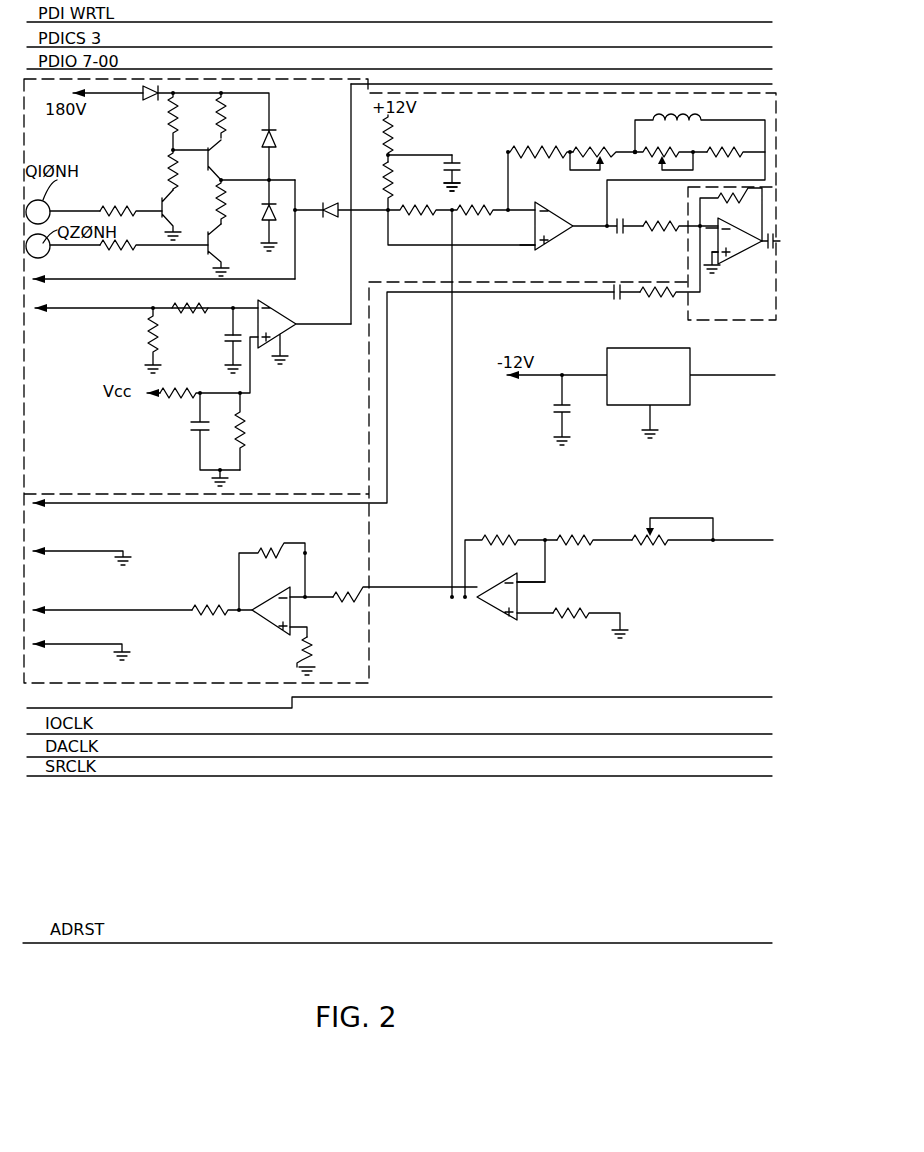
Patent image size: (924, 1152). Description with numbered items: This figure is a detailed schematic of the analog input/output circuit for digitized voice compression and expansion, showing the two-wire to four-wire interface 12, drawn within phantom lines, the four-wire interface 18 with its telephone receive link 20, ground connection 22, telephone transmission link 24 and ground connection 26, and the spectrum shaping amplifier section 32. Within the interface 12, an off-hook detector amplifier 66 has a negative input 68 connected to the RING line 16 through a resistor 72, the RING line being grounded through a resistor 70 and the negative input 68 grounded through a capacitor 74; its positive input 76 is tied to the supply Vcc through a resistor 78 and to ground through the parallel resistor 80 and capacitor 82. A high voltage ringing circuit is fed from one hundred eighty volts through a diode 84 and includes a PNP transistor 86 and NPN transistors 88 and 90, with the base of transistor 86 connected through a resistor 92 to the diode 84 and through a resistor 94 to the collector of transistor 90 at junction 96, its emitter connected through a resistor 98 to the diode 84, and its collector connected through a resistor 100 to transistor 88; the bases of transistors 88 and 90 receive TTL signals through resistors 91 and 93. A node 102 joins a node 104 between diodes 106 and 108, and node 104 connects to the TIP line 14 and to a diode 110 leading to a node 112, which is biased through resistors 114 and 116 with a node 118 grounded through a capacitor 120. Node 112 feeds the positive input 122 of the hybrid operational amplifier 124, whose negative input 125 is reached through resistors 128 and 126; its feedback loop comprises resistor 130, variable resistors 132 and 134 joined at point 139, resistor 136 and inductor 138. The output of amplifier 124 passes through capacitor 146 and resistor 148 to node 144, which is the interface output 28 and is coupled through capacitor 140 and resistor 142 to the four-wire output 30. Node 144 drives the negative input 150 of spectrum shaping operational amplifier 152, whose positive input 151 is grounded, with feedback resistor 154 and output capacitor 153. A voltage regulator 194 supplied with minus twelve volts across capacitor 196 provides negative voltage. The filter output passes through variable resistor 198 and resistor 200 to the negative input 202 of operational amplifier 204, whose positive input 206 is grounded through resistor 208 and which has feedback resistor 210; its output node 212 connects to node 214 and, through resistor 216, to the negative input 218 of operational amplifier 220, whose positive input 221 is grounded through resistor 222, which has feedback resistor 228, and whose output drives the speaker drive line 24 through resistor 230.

The two-wire to four-wire interface 12 is at (244, 76).
The two-wire telephone transmission line (TIP line) 14 is at (132, 288).
The two-wire telephone transmission line (RING line) 16 is at (87, 312).
The four-wire interface 18 is at (263, 684).
The telephone receive link 20 is at (101, 506).
The ground connection 22 is at (88, 555).
The telephone transmission link 24 is at (123, 613).
The ground connection 26 is at (93, 648).
The output of two-wire-to-four-wire interface 28 is at (718, 224).
The output of four-wire interface 30 is at (388, 465).
The spectrum shaping amplifier 32 is at (721, 321).
The off-hook detector amplifier 66 is at (295, 315).
The negative input 68 is at (257, 303).
The 47 ohm resistor 70 is at (162, 342).
The 160 Kohm resistor 72 is at (190, 300).
The 1 microfarad capacitor 74 is at (228, 346).
The positive input 76 is at (255, 343).
The 10 Kohm resistor 78 is at (180, 397).
The 1.6 Kohm resistor 80 is at (243, 430).
The 0.01 microfarad capacitor 82 is at (197, 432).
The diode 84 is at (150, 101).
The PNP transistor 86 is at (207, 156).
The NPN transistor 88 is at (199, 249).
The NPN transistor 90 is at (162, 203).
The 82 Kohm resistor 91 is at (117, 195).
The 4.7 Kohm resistor 92 is at (177, 116).
The 360 ohm resistor 93 is at (135, 251).
The 27 Kohm resistor 94 is at (174, 188).
The junction 96 is at (210, 137).
The 47 ohm resistor 98 is at (223, 130).
The 47 ohm resistor 100 is at (221, 212).
The node 102 is at (221, 179).
The node 104 is at (271, 176).
The diode 106 is at (277, 137).
The diode 108 is at (265, 213).
The diode 110 is at (341, 200).
The node 112 is at (392, 204).
The 82 ohm resistor 114 is at (393, 180).
The 82 ohm resistor 116 is at (392, 134).
The node 118 is at (392, 153).
The 0.01 microfarad capacitor 120 is at (462, 168).
The positive input 122 is at (537, 246).
The hybrid operational amplifier 124 is at (553, 214).
The negative input 125 is at (517, 207).
The 1.2 Kohm resistor 126 is at (404, 216).
The 1.2 Kohm resistor 128 is at (495, 216).
The 27 ohm resistor 130 is at (711, 150).
The 100 ohm variable resistor 132 is at (652, 150).
The second 100 ohm variable resistor 134 is at (600, 150).
The second 27 ohm resistor 136 is at (525, 150).
The 55 millihenry inductor 138 is at (699, 113).
The node 139 is at (636, 155).
The 0.033 microfarad capacitor 140 is at (620, 283).
The 18 Kohm resistor 142 is at (645, 295).
The node 144 is at (699, 223).
The 0.068 microfarad capacitor 146 is at (620, 234).
The 9.1 Kohm resistor 148 is at (655, 221).
The negative input 150 is at (716, 229).
The positive input 151 is at (714, 252).
The spectrum shaping operational amplifier 152 is at (729, 236).
The 0.068 microfarad capacitor 153 is at (768, 249).
The 39.2 Kohm resistor 154 is at (744, 186).
The voltage regulator 194 is at (692, 402).
The 2 microfarad capacitor 196 is at (553, 407).
The 10 Kohm variable resistor 198 is at (650, 546).
The 10 Kohm resistor 200 is at (572, 537).
The negative input 202 is at (528, 569).
The operational amplifier 204 is at (490, 605).
The positive input 206 is at (518, 619).
The 8.2 Kohm resistor 208 is at (568, 611).
The 27 Kohm resistor 210 is at (495, 538).
The node 212 is at (451, 596).
The node 214 is at (462, 199).
The 18 Kohm resistor 216 is at (352, 590).
The negative input 218 is at (295, 588).
The operational amplifier 220 is at (262, 622).
The positive input 221 is at (297, 627).
The 13 Kohm resistor 222 is at (311, 648).
The 9.1 Kohm resistor 228 is at (256, 552).
The 619 ohm resistor 230 is at (216, 604).